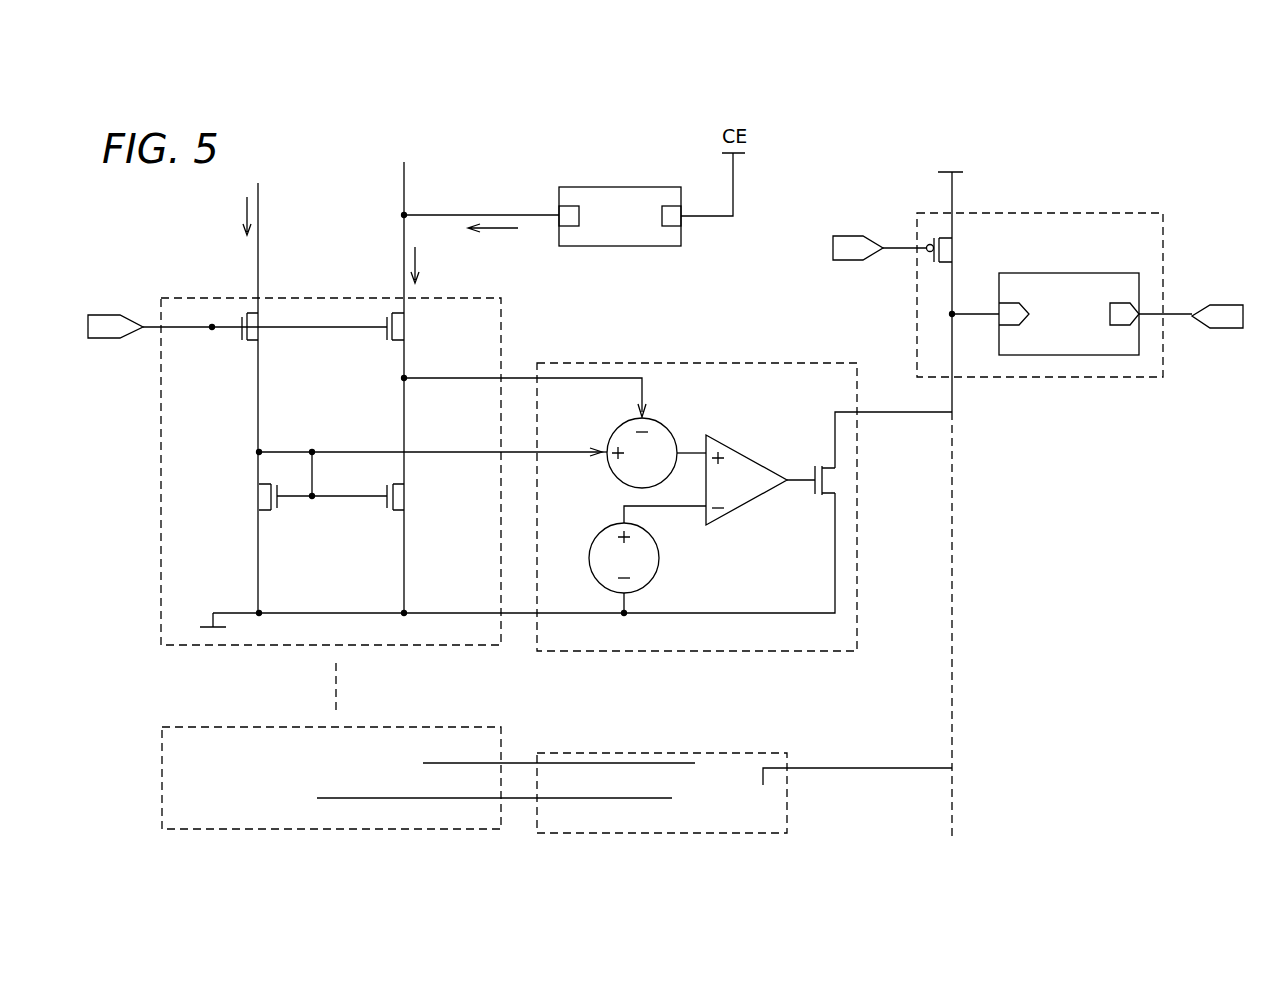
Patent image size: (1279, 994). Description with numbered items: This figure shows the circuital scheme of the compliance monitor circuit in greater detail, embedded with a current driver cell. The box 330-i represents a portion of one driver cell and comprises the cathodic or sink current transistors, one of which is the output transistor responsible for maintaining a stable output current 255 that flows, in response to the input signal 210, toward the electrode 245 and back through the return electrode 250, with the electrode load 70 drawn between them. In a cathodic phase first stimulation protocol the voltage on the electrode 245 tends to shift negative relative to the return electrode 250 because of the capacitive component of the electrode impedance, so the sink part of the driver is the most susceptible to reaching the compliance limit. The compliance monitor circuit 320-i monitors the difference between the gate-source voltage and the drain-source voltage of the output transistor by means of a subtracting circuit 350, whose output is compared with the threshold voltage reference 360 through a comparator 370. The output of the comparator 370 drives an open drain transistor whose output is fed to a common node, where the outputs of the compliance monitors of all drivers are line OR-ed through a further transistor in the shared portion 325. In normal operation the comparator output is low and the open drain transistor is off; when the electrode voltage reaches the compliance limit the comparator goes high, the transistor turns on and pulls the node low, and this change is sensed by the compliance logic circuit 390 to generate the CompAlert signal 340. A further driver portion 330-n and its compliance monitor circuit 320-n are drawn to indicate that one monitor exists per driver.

The signal 210 is at (105, 315).
The output current 255 is at (468, 215).
The electrode 245 is at (573, 205).
The return electrode 250 is at (670, 205).
The tissue load 70 is at (634, 220).
The CompAlert signal 340 is at (1182, 313).
The compliance monitor portion 325 is at (971, 297).
The compliance logic circuit 390 is at (1098, 356).
The subtracting circuit 350 is at (665, 430).
The comparator 370 is at (735, 445).
The threshold voltage Vt reference 360 is at (660, 558).
The portion of driver cell 330-i is at (437, 648).
The portion of driver cell 330-n is at (212, 725).
The compliance monitor circuit 320-i is at (678, 540).
The compliance monitor circuit 320-n is at (572, 750).